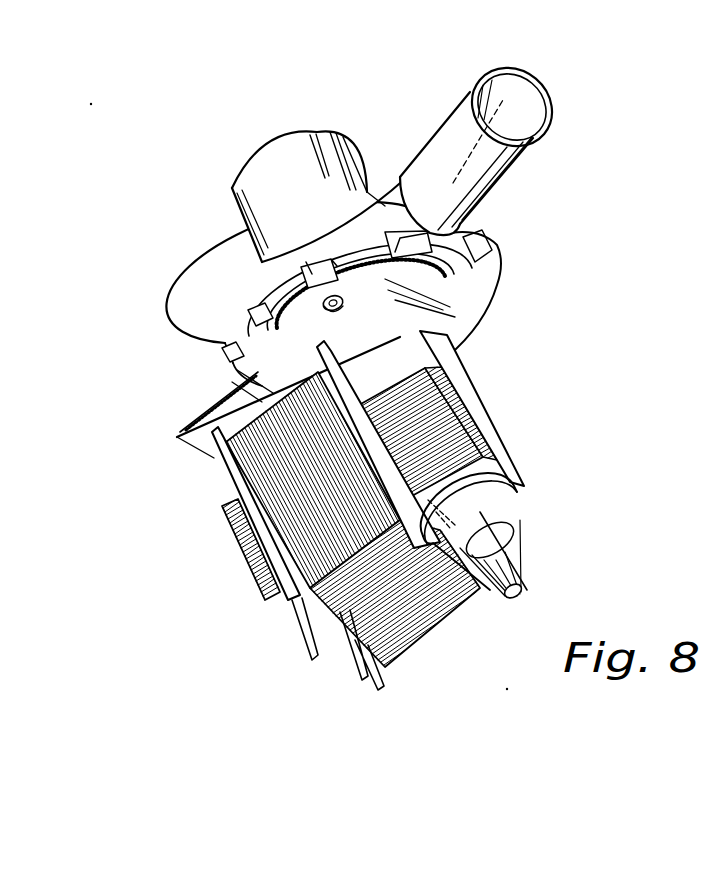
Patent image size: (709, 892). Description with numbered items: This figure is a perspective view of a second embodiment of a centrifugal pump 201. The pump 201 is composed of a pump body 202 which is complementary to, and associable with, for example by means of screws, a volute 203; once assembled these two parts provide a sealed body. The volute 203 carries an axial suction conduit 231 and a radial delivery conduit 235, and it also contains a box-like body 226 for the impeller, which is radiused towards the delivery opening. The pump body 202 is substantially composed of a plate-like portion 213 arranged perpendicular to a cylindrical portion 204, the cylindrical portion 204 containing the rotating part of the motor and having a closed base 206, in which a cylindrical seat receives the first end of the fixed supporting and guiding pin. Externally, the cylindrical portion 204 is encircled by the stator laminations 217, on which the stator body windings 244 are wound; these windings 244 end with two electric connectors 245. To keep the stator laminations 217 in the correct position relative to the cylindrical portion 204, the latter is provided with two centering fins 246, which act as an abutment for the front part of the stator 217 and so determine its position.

The pump 201 is at (420, 386).
The pump body 202 is at (390, 505).
The volute 203 is at (371, 330).
The cylindrical portion 204 is at (490, 488).
The closed base 206 is at (523, 562).
The plate-like portion 213 is at (482, 288).
The stator laminations 217 is at (440, 447).
The box-like body 226 is at (363, 213).
The axial suction conduit 231 is at (328, 157).
The radial delivery conduit 235 is at (507, 160).
The stator body windings 244 is at (310, 618).
The electric connectors 245 is at (300, 653).
The centering fins 246 is at (470, 410).